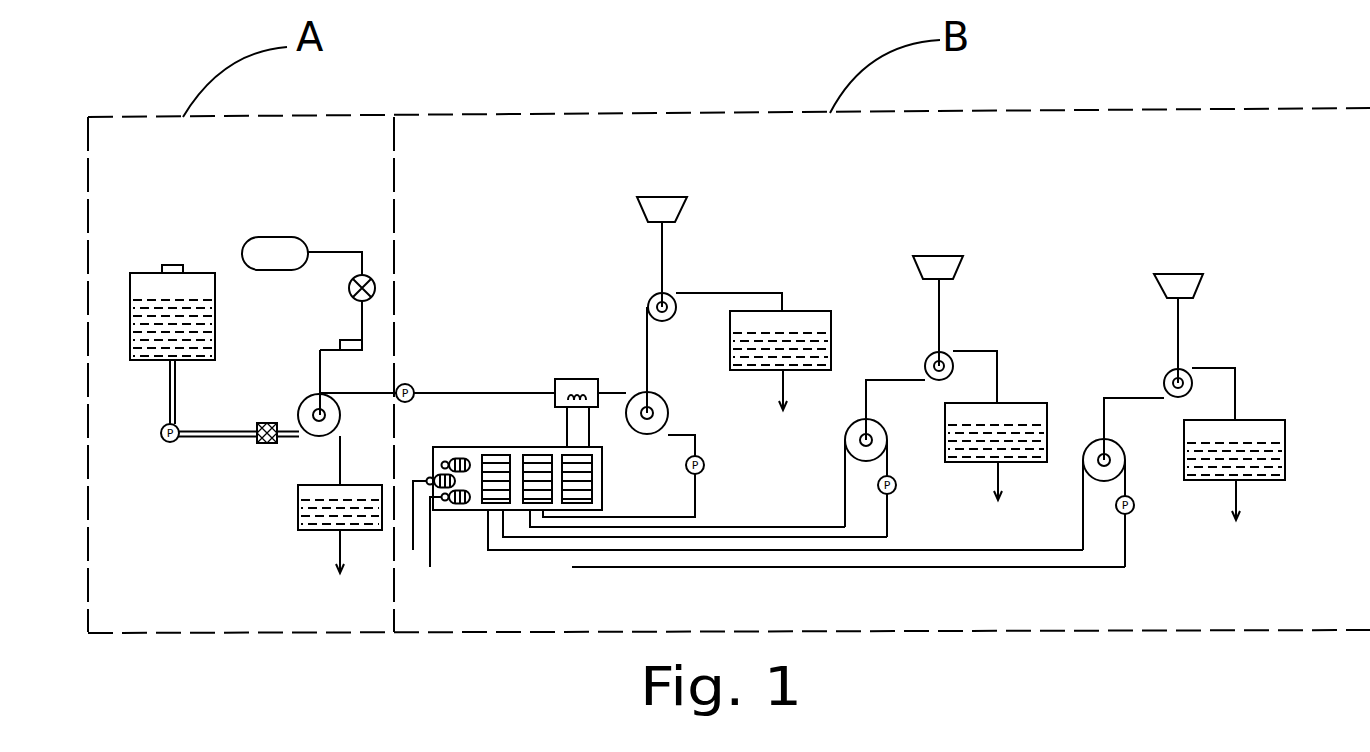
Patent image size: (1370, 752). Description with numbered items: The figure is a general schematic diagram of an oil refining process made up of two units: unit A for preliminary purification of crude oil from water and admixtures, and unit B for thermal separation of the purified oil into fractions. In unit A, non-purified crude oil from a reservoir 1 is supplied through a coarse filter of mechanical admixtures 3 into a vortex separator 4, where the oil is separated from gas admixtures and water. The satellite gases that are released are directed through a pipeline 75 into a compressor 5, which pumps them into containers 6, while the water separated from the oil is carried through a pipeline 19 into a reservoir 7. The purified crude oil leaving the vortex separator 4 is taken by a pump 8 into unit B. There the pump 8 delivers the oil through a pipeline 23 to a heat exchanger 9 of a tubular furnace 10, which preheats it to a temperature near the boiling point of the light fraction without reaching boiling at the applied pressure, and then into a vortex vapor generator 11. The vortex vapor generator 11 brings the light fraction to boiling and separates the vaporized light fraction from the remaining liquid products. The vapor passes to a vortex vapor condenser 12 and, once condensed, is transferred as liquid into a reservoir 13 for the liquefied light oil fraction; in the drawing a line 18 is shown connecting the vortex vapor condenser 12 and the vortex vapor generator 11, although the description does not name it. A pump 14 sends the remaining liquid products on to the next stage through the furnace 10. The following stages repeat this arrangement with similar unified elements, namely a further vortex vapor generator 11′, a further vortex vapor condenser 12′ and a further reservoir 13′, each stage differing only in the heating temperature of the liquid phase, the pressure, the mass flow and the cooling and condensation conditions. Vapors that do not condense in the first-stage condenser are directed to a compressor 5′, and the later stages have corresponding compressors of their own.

The reservoir 1 is at (203, 328).
The coarse filter of mechanical admixtures 3 is at (260, 443).
The vortex separator 4 is at (313, 410).
The compressor 5 is at (353, 347).
The containers 6 is at (273, 247).
The reservoir 7 is at (313, 500).
The pump 8 is at (407, 385).
The heat exchanger 9 is at (578, 378).
The tubular furnace 10 is at (537, 467).
The vortex vapor generator 11 is at (648, 395).
The vortex vapor condenser 12 is at (650, 300).
The reservoir 13 is at (787, 312).
The pump 14 is at (700, 457).
The supply line 18 is at (647, 360).
The pipeline 19 is at (343, 477).
The pipeline 23 is at (353, 395).
The pipeline 75 is at (320, 388).
The compressor 5′ is at (662, 198).
The vortex vapor generator 11′ is at (846, 436).
The vortex vapor condenser 12′ is at (930, 360).
The reservoir 13′ is at (997, 412).